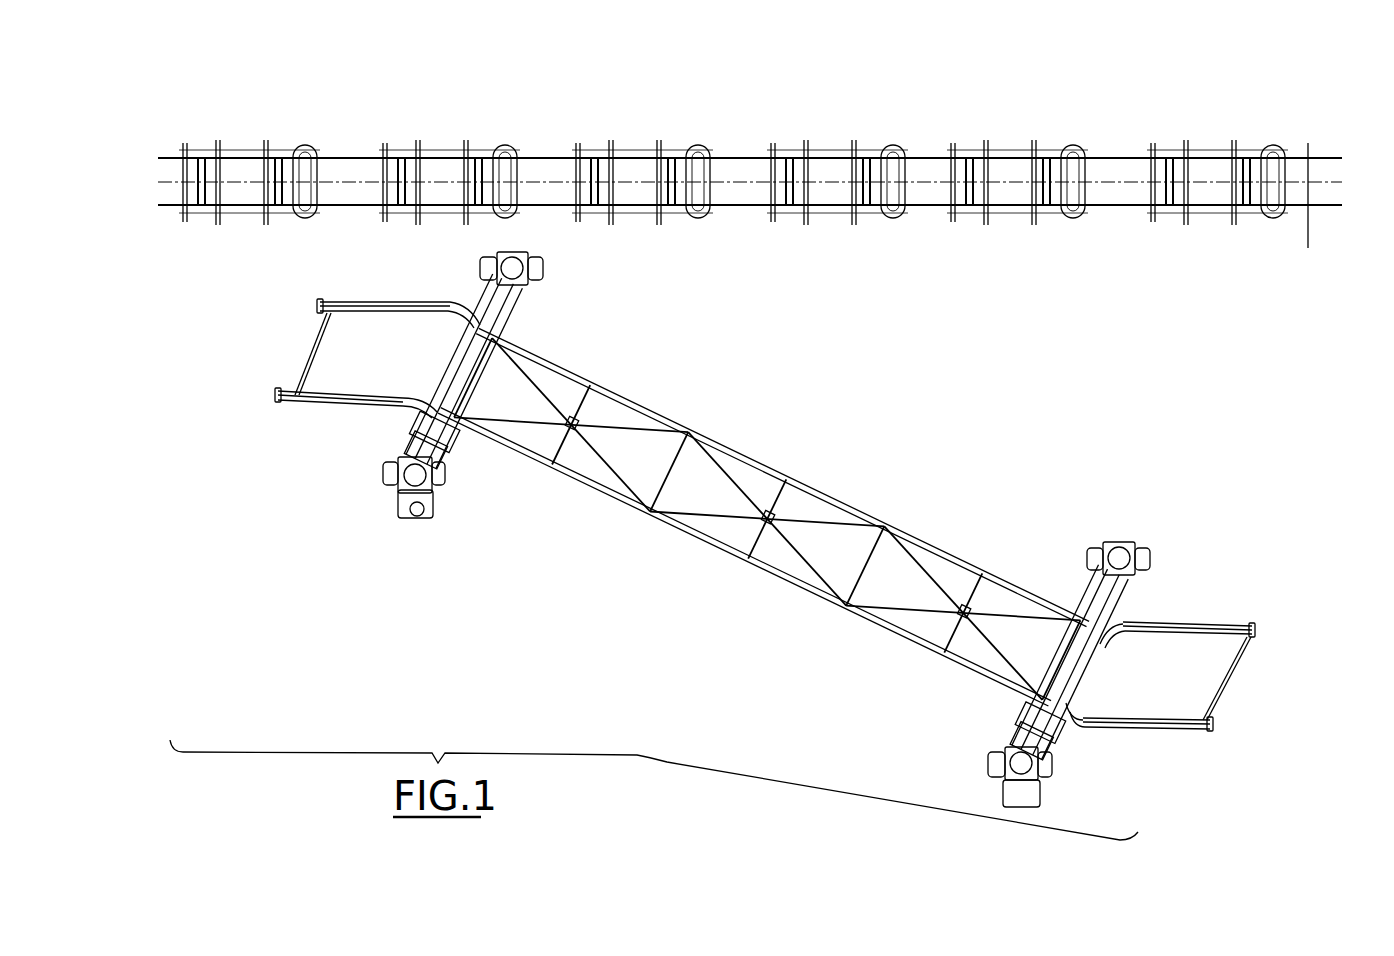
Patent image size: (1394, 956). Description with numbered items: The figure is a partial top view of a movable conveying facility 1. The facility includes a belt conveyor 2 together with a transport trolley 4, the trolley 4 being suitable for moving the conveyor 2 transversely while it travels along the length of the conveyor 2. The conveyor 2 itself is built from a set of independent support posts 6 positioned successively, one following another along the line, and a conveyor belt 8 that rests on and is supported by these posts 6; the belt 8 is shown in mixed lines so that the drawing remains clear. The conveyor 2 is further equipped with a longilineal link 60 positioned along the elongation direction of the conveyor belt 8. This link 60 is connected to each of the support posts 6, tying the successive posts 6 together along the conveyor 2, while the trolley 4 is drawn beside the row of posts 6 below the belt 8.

The movable conveying facility 1 is at (741, 529).
The belt conveyor 2 is at (752, 223).
The transport trolley 4 is at (741, 612).
The support posts 6 is at (258, 125).
The conveyor belt 8 is at (160, 207).
The longilineal link 60 is at (1322, 165).